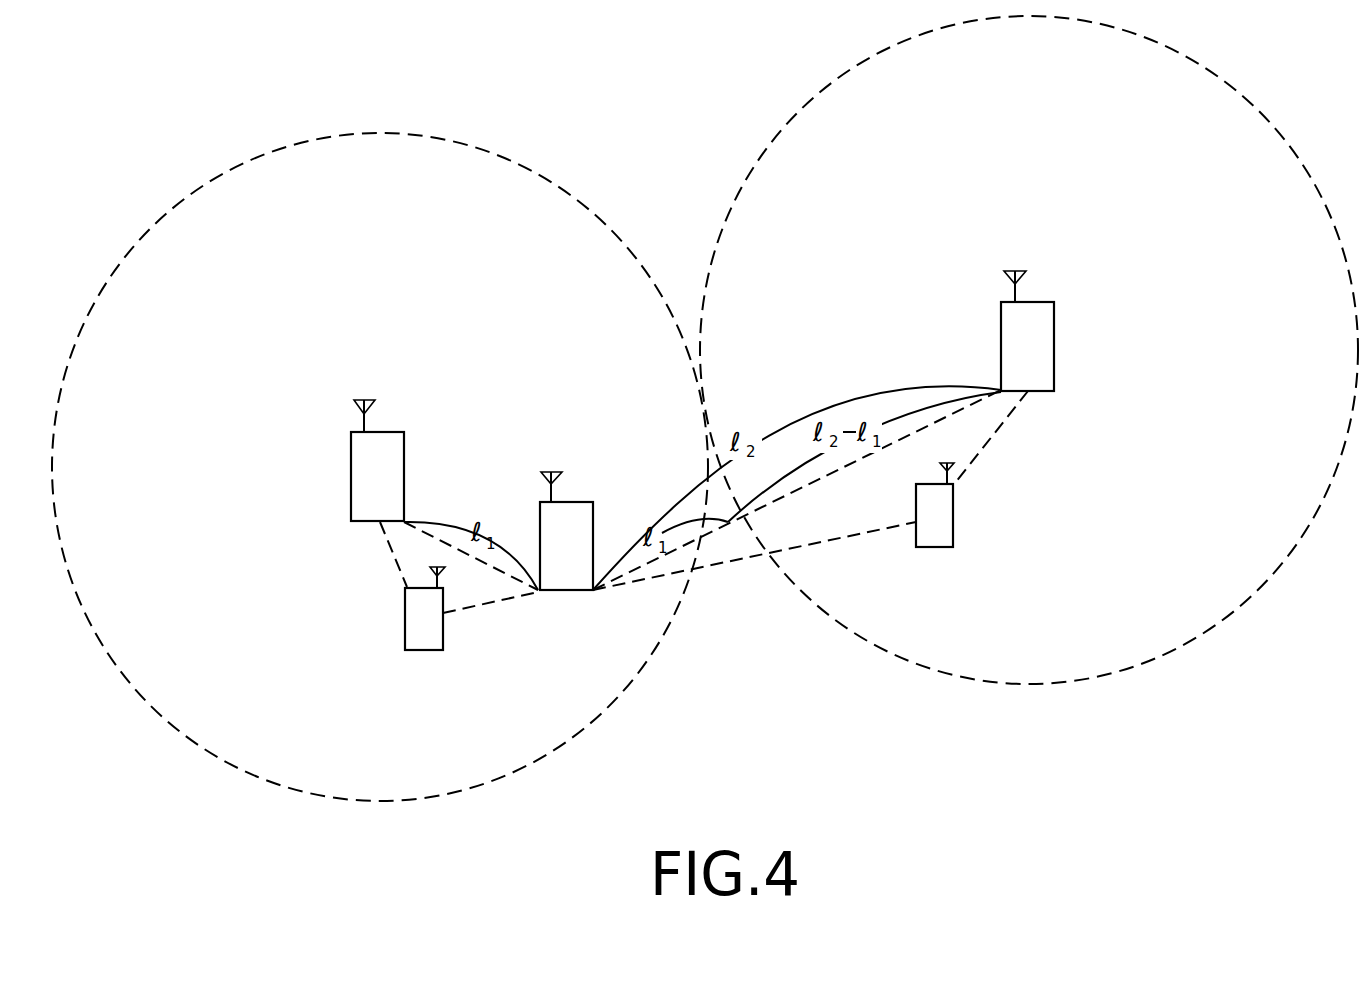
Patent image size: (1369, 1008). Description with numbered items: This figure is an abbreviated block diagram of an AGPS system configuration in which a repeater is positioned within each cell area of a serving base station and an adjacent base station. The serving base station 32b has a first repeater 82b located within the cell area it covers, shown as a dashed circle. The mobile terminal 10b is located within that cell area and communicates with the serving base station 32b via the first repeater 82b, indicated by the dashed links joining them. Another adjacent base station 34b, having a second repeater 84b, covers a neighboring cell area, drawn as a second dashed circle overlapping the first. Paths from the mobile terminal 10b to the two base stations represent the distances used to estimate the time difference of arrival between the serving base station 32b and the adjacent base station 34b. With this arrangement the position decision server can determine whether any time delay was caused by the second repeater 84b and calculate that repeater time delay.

The serving base station 32b is at (351, 472).
The mobile terminal 10b is at (578, 502).
The first repeater 82b is at (405, 635).
The adjacent base station 34b is at (1054, 348).
The second repeater 84b is at (936, 548).